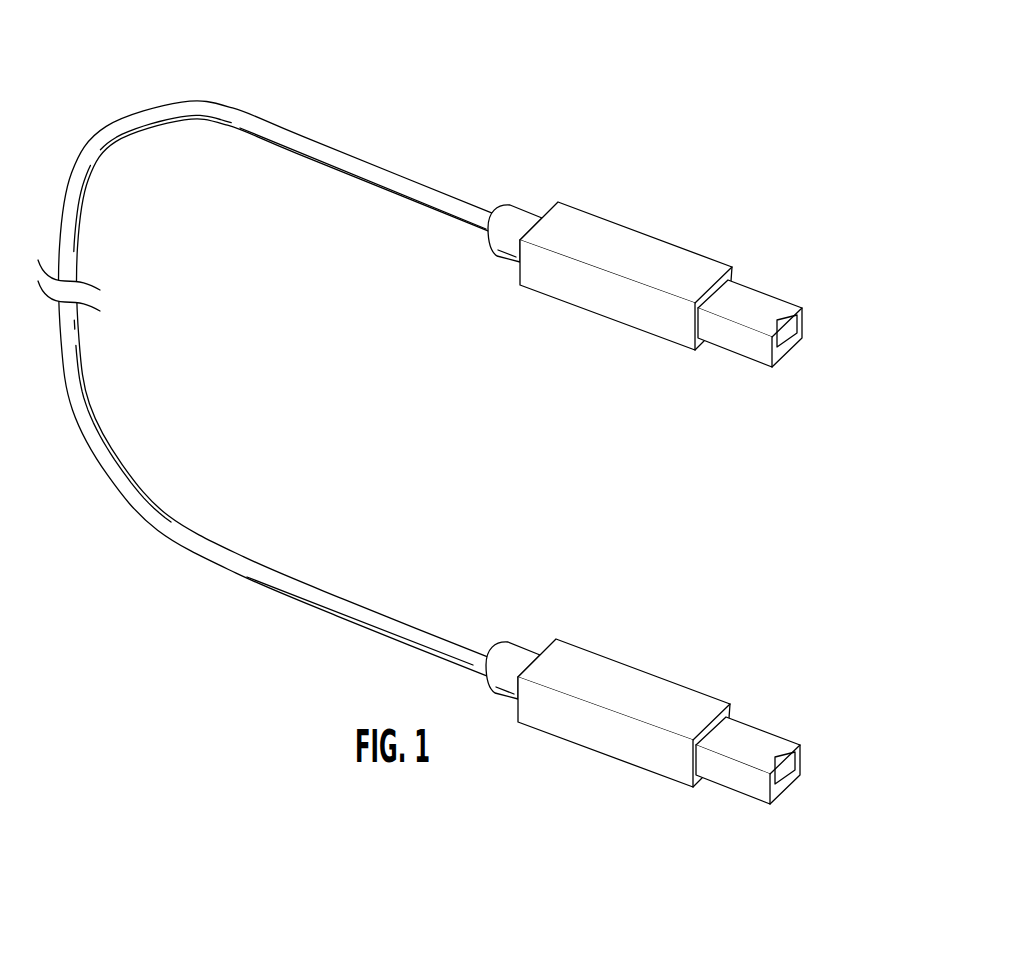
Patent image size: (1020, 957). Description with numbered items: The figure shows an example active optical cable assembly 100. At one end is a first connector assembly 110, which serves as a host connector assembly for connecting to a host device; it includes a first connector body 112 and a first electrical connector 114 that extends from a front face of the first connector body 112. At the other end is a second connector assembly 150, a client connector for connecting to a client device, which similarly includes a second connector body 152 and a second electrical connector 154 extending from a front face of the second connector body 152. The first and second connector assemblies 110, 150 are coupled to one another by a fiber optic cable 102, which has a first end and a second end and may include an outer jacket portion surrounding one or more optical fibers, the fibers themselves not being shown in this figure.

The active optical cable assembly 100 is at (103, 93).
The fiber optic cable 102 is at (390, 183).
The first connector assembly 110 is at (667, 203).
The first connector body 112 is at (698, 252).
The first electrical connector 114 is at (772, 295).
The second connector assembly 150 is at (667, 640).
The second connector body 152 is at (680, 684).
The second electrical connector 154 is at (758, 734).